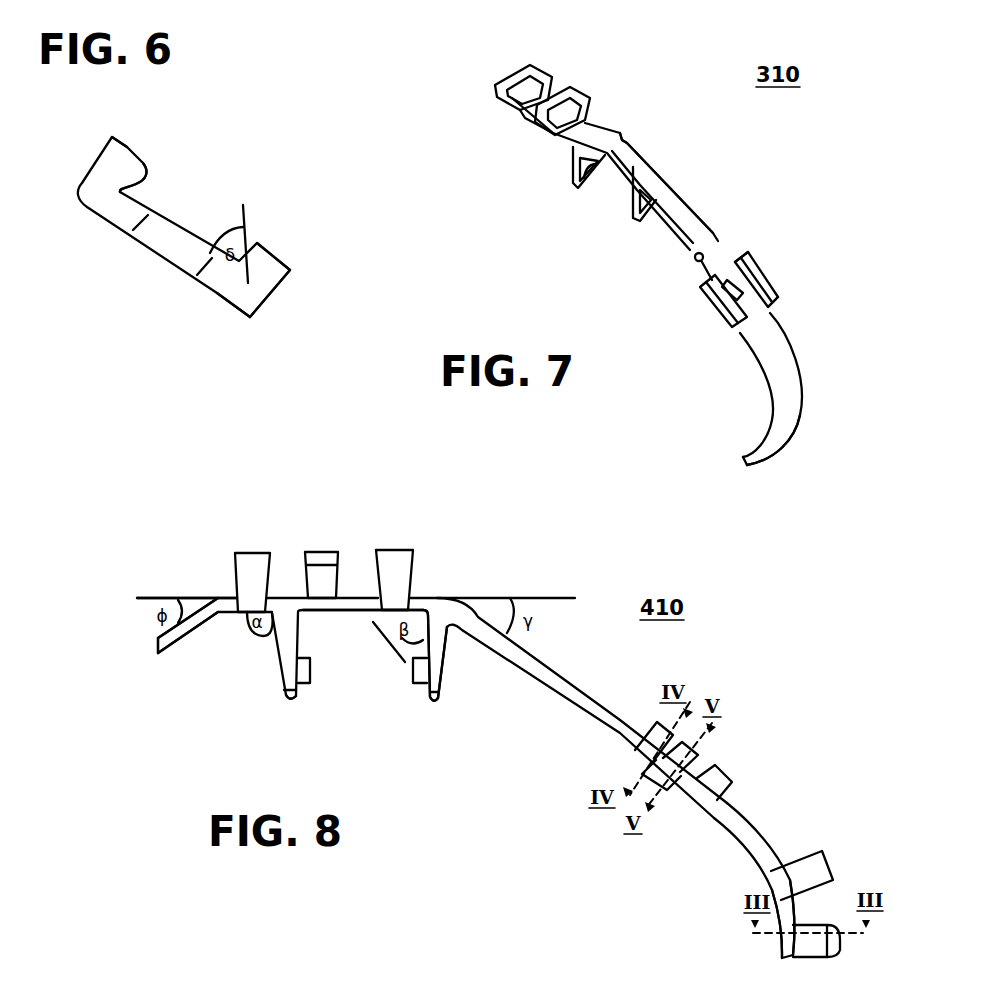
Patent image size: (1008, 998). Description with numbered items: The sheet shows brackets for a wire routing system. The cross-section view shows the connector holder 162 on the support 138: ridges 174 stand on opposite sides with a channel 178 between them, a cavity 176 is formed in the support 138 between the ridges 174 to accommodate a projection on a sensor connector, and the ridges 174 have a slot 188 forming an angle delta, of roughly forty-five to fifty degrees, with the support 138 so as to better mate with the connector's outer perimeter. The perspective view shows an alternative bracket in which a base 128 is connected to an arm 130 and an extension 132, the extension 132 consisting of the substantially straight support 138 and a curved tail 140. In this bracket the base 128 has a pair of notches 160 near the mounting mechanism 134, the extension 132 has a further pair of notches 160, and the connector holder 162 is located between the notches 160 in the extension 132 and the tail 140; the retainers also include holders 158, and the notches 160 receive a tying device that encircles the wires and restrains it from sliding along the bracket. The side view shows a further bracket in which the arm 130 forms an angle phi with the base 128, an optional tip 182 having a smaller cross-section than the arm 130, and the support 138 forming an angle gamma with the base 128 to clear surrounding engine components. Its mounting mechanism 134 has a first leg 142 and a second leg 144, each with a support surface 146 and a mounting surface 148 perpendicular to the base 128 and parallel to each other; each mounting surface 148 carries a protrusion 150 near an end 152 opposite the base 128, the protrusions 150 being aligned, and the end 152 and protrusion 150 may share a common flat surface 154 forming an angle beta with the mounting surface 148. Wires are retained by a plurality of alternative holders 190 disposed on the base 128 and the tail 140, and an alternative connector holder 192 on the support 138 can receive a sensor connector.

In FIG. 7, the base 128 is at (597, 130).
In FIG. 8, the base 128 is at (283, 607).
In FIG. 7, the arm 130 is at (557, 90).
In FIG. 8, the arm 130 is at (212, 597).
In FIG. 7, the extension 132 is at (743, 330).
In FIG. 8, the extension 132 is at (730, 820).
In FIG. 8, the mounting mechanism 134 is at (517, 737).
In FIG. 6, the support 138 is at (210, 280).
In FIG. 7, the support 138 is at (687, 223).
In FIG. 8, the support 138 is at (585, 688).
In FIG. 7, the tail 140 is at (787, 410).
In FIG. 8, the tail 140 is at (747, 823).
In FIG. 8, the first leg 142 is at (286, 670).
In FIG. 8, the second leg 144 is at (445, 680).
In FIG. 8, the support surface 146 is at (270, 630).
In FIG. 8, the mounting surface 148 is at (418, 617).
In FIG. 8, the protrusion 150 is at (308, 675).
In FIG. 8, the end 152 is at (283, 703).
In FIG. 8, the common flat surface 154 is at (303, 683).
In FIG. 7, the holder 158 is at (515, 75).
In FIG. 7, the notch 160 is at (633, 138).
In FIG. 7, the connector holder 162 is at (727, 313).
In FIG. 6, the ridge 174 is at (123, 150).
In FIG. 7, the ridge 174 is at (753, 277).
In FIG. 6, the cavity 176 is at (170, 253).
In FIG. 7, the cavity 176 is at (733, 262).
In FIG. 6, the channel 178 is at (175, 225).
In FIG. 7, the channel 178 is at (750, 297).
In FIG. 8, the tip 182 is at (158, 655).
In FIG. 6, the slot 188 is at (131, 180).
In FIG. 8, the holder 190 is at (245, 555).
In FIG. 8, the connector holder 192 is at (713, 757).